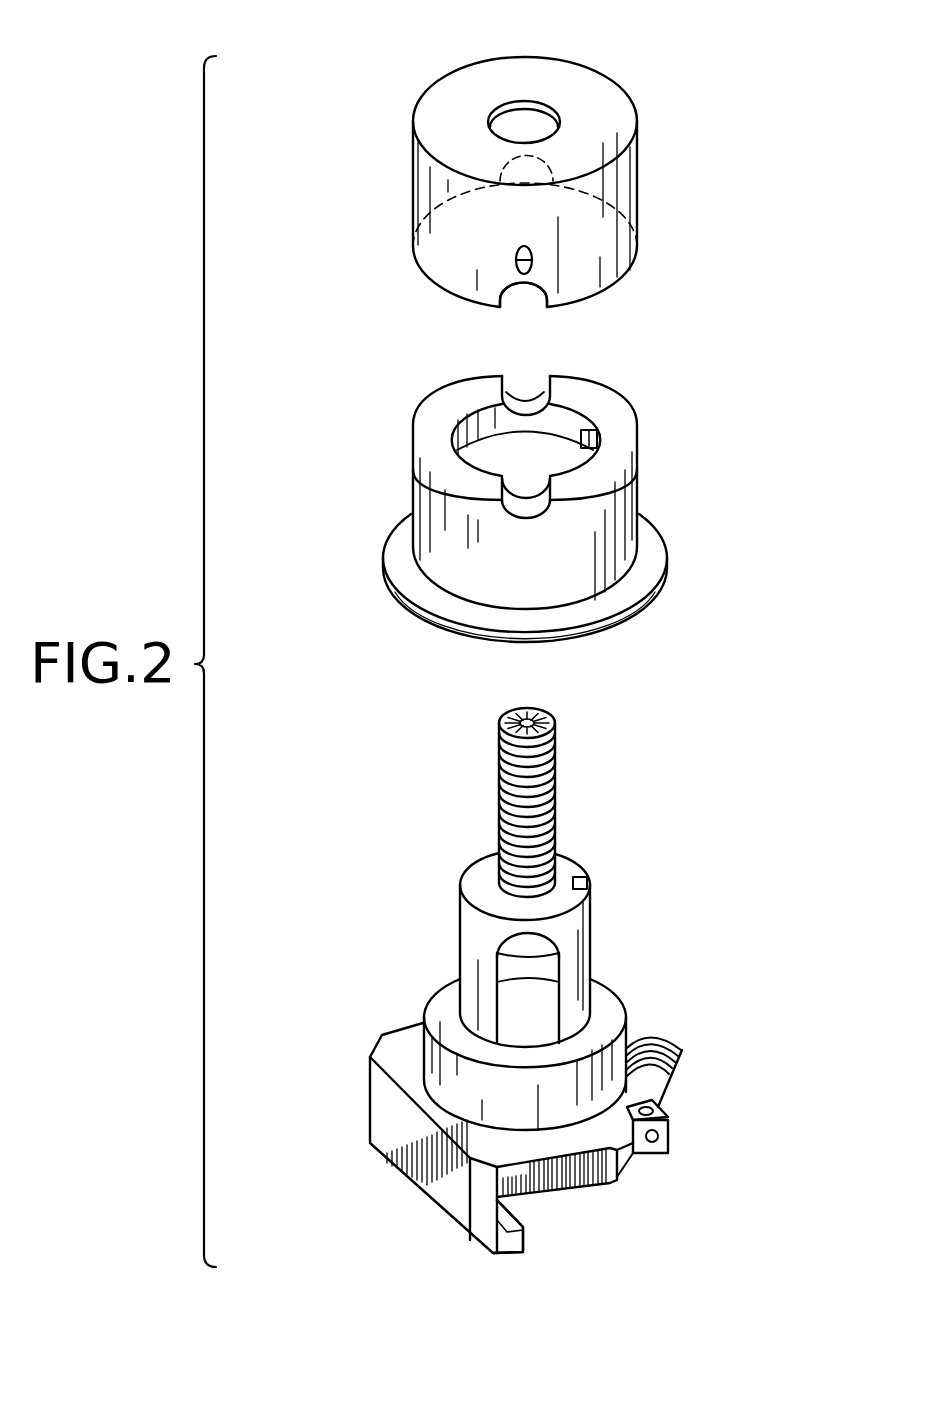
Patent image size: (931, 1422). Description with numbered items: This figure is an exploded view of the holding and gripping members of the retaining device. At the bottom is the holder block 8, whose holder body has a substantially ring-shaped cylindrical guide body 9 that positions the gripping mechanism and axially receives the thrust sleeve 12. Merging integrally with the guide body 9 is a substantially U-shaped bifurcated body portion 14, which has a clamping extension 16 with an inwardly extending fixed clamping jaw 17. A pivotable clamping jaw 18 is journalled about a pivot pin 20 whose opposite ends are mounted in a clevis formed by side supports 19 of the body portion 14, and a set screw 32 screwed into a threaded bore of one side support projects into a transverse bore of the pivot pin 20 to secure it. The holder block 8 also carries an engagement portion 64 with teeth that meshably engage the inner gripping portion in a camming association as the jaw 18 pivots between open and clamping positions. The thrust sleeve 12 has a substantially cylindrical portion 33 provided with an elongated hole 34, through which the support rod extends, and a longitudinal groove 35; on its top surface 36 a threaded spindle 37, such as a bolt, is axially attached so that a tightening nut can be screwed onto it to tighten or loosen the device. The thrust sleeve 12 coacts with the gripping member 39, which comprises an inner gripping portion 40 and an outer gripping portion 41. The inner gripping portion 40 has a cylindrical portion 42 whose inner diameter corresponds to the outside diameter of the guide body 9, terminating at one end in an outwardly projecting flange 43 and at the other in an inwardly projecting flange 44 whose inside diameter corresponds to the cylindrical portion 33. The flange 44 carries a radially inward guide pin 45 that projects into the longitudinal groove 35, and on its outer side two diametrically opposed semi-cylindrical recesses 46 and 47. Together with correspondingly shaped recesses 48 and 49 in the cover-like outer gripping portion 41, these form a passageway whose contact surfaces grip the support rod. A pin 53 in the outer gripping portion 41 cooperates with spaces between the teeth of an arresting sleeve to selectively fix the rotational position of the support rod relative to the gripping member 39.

The holder block 8 is at (378, 1188).
The guide body 9 is at (423, 1007).
The thrust sleeve 12 is at (600, 937).
The bifurcated body portion 14 is at (400, 1060).
The clamping extension 16 is at (393, 1130).
The fixed clamping jaw 17 is at (480, 1238).
The pivotable clamping jaw 18 is at (667, 1072).
The side supports 19 is at (670, 1110).
The pivot pin 20 is at (658, 1137).
The set screw 32 is at (634, 1157).
The cylindrical portion 33 is at (470, 937).
The elongated hole 34 is at (545, 1013).
The longitudinal groove 35 is at (590, 884).
The top surface 36 is at (570, 867).
The threaded spindle 37 is at (540, 764).
The gripping member 39 is at (368, 345).
The inner gripping portion 40 is at (381, 462).
The outer gripping portion 41 is at (402, 181).
The cylindrical portion 42 is at (433, 513).
The outwardly projecting flange 43 is at (392, 568).
The inwardly projecting flange 44 is at (443, 411).
The guide pin 45 is at (598, 436).
The recess 46 is at (526, 398).
The recess 47 is at (524, 515).
The recess 48 is at (523, 300).
The recess 49 is at (535, 165).
The pin 53 is at (516, 264).
The engagement portion 64 is at (650, 1035).